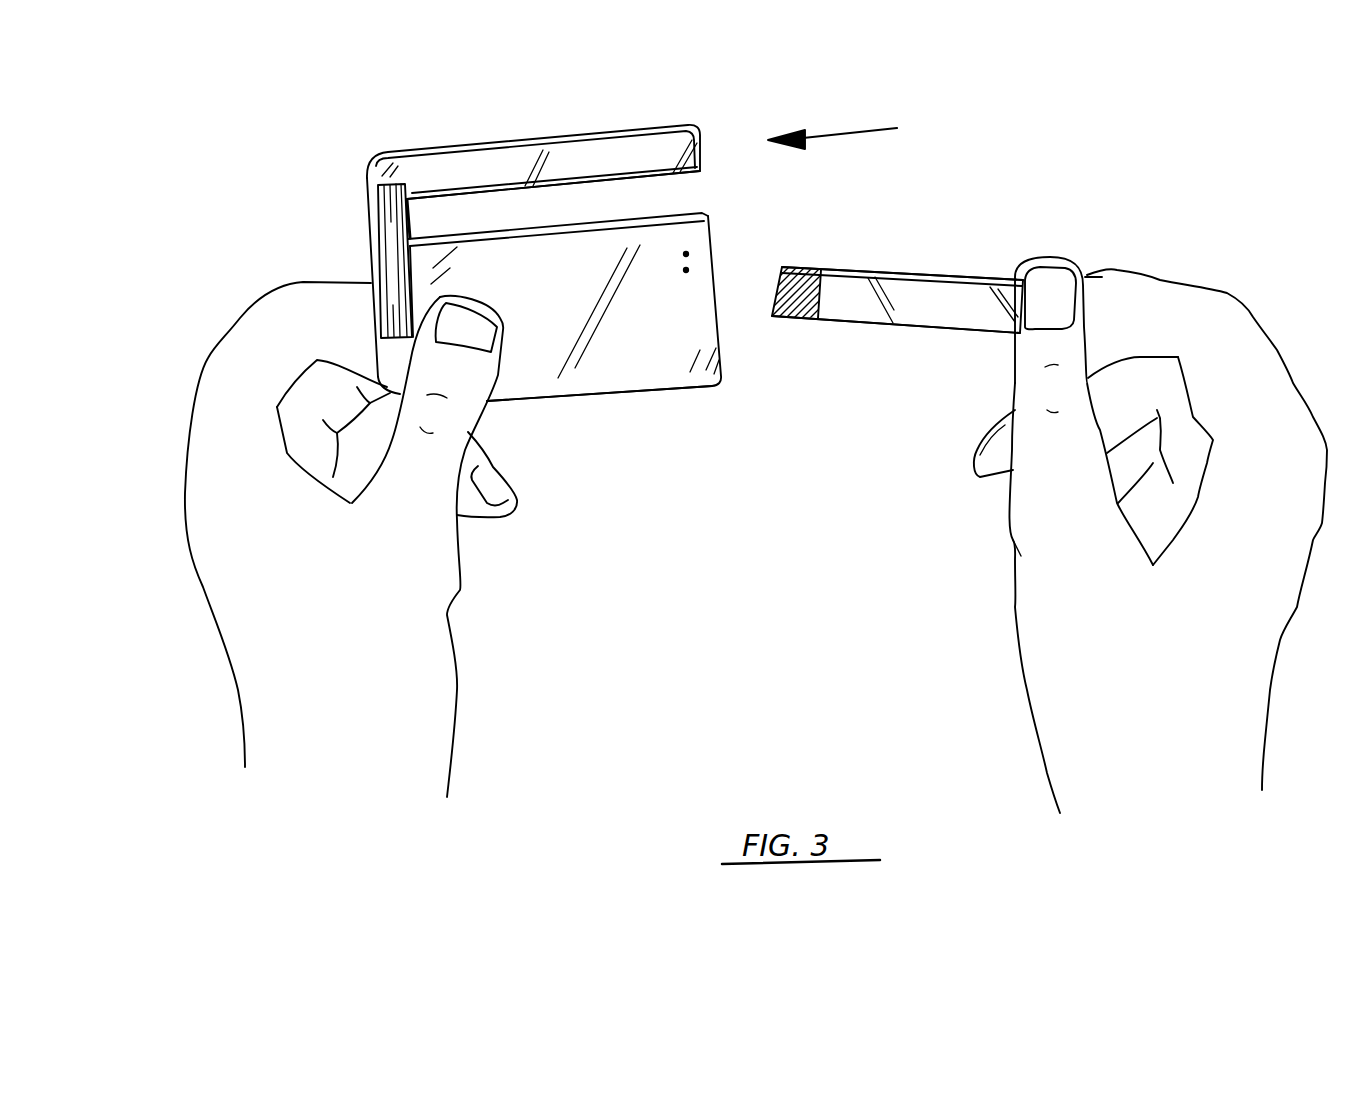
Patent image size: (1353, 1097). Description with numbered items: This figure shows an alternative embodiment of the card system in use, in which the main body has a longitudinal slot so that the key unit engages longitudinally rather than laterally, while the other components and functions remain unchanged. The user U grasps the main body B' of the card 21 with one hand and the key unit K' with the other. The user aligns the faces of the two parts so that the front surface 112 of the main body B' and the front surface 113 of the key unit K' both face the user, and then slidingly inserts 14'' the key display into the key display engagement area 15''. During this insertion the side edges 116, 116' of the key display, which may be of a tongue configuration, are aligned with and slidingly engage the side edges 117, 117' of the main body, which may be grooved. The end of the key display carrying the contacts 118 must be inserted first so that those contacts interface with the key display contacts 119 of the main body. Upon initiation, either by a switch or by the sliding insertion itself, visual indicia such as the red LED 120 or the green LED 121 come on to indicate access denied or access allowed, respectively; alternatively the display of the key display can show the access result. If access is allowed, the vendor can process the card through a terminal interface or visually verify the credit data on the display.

The card holder 21 is at (373, 223).
The key display engagement area 15'' is at (578, 138).
The side edge of the main body 117 is at (553, 129).
The key display contacts of the main body 119 is at (410, 197).
The side edge of the main body 117' is at (558, 219).
The front surface of the main body 112 is at (667, 374).
The main body B' is at (599, 433).
The red LED 120 is at (692, 251).
The green LED 121 is at (690, 270).
The sliding insertion 14'' is at (832, 123).
The key unit K' is at (912, 306).
The front surface of the key unit 113 is at (877, 311).
The contacts 118 is at (812, 268).
The side edge of the key display 116 is at (902, 238).
The side edge of the key display 116' is at (896, 368).
The user U is at (430, 760).